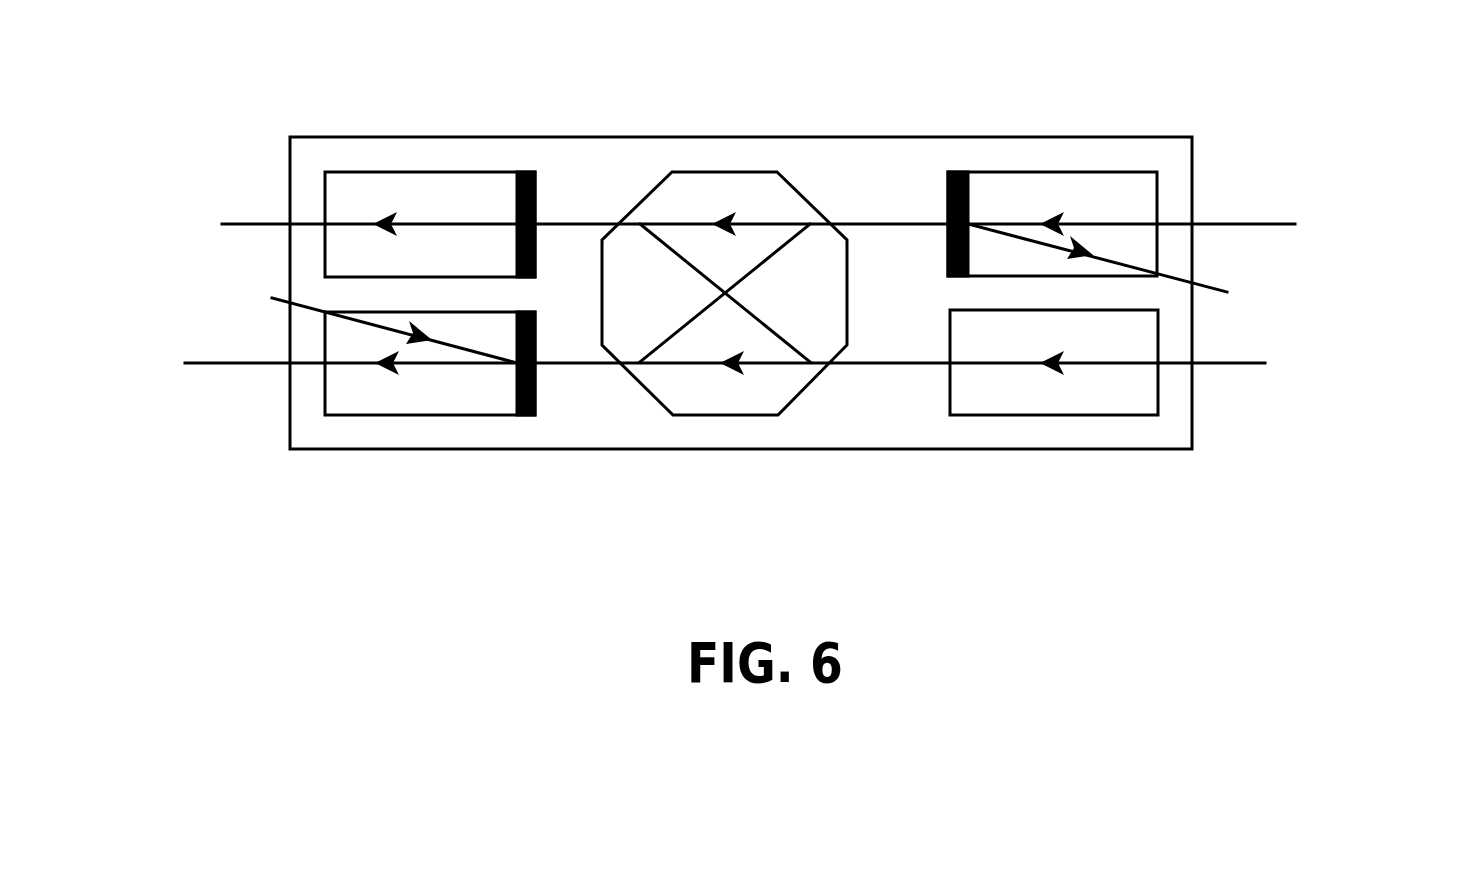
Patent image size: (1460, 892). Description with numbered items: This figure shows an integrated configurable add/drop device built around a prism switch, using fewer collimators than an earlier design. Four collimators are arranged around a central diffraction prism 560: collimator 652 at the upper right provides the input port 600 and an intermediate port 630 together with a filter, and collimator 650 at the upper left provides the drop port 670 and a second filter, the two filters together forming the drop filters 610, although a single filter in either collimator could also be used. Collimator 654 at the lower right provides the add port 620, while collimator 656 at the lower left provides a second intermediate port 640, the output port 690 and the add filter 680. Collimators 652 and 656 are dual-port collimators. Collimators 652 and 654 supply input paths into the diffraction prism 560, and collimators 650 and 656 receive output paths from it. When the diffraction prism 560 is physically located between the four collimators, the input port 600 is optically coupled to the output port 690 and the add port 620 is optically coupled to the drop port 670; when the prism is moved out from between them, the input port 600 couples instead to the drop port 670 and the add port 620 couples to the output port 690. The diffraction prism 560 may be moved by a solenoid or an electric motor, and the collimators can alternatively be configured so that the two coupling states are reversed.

The diffraction prism 560 is at (707, 415).
The input port 600 is at (1297, 206).
The drop filters 610 is at (525, 172).
The add port 620 is at (1292, 382).
The intermediate port 630 is at (1183, 276).
The intermediate port 640 is at (309, 308).
The collimator 650 is at (357, 172).
The collimator 652 is at (1185, 95).
The collimator 654 is at (1128, 415).
The collimator 656 is at (358, 415).
The drop port 670 is at (222, 207).
The add filter 680 is at (527, 415).
The output port 690 is at (215, 398).